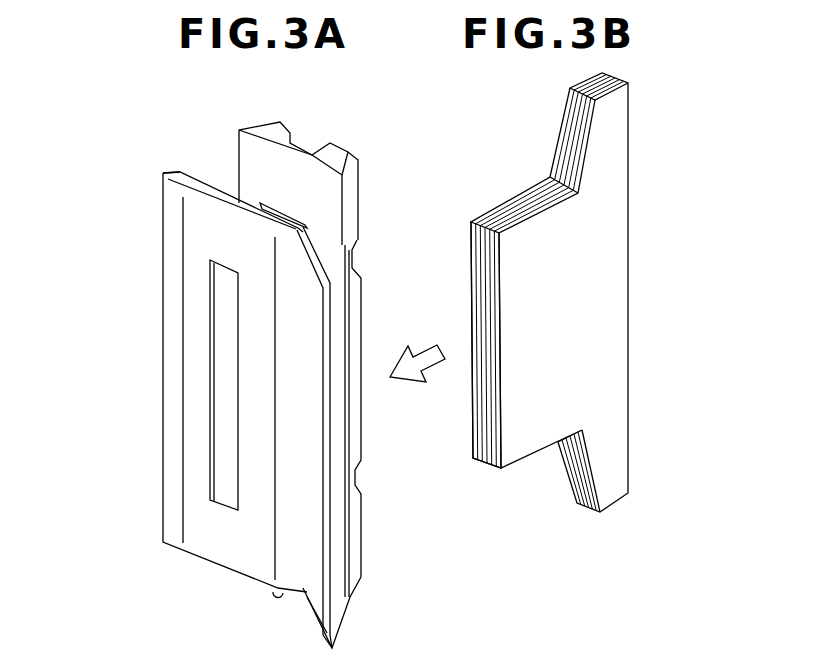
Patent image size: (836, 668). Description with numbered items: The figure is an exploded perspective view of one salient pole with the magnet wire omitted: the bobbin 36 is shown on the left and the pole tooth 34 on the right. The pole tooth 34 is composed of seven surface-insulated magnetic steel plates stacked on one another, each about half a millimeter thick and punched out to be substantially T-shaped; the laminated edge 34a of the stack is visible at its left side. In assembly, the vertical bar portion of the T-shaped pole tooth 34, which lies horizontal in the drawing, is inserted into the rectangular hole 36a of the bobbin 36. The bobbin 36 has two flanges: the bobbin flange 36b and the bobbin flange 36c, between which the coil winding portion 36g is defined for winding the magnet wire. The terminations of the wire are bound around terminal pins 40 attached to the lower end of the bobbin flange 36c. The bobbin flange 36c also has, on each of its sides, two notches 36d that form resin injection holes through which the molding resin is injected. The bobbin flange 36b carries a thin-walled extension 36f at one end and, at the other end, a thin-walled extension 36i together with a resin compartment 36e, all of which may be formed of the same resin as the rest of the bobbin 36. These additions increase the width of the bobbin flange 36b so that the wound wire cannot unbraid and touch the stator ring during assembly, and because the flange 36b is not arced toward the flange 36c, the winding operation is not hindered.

In FIG. 3A, the bobbin 36 is at (148, 332).
In FIG. 3A, the rectangular hole 36a is at (225, 470).
In FIG. 3A, the bobbin flange 36b is at (197, 237).
In FIG. 3A, the bobbin flange 36c is at (255, 162).
In FIG. 3A, the notches 36d is at (365, 248).
In FIG. 3A, the resin compartment 36e is at (343, 558).
In FIG. 3A, the thin-walled extension 36f is at (163, 172).
In FIG. 3A, the coil winding portion 36g is at (288, 208).
In FIG. 3A, the thin-walled extension 36i is at (307, 225).
In FIG. 3A, the terminal pins 40 is at (275, 600).
In FIG. 3B, the pole tooth 34 is at (590, 297).
In FIG. 3B, the edge face of plate 34a is at (482, 312).